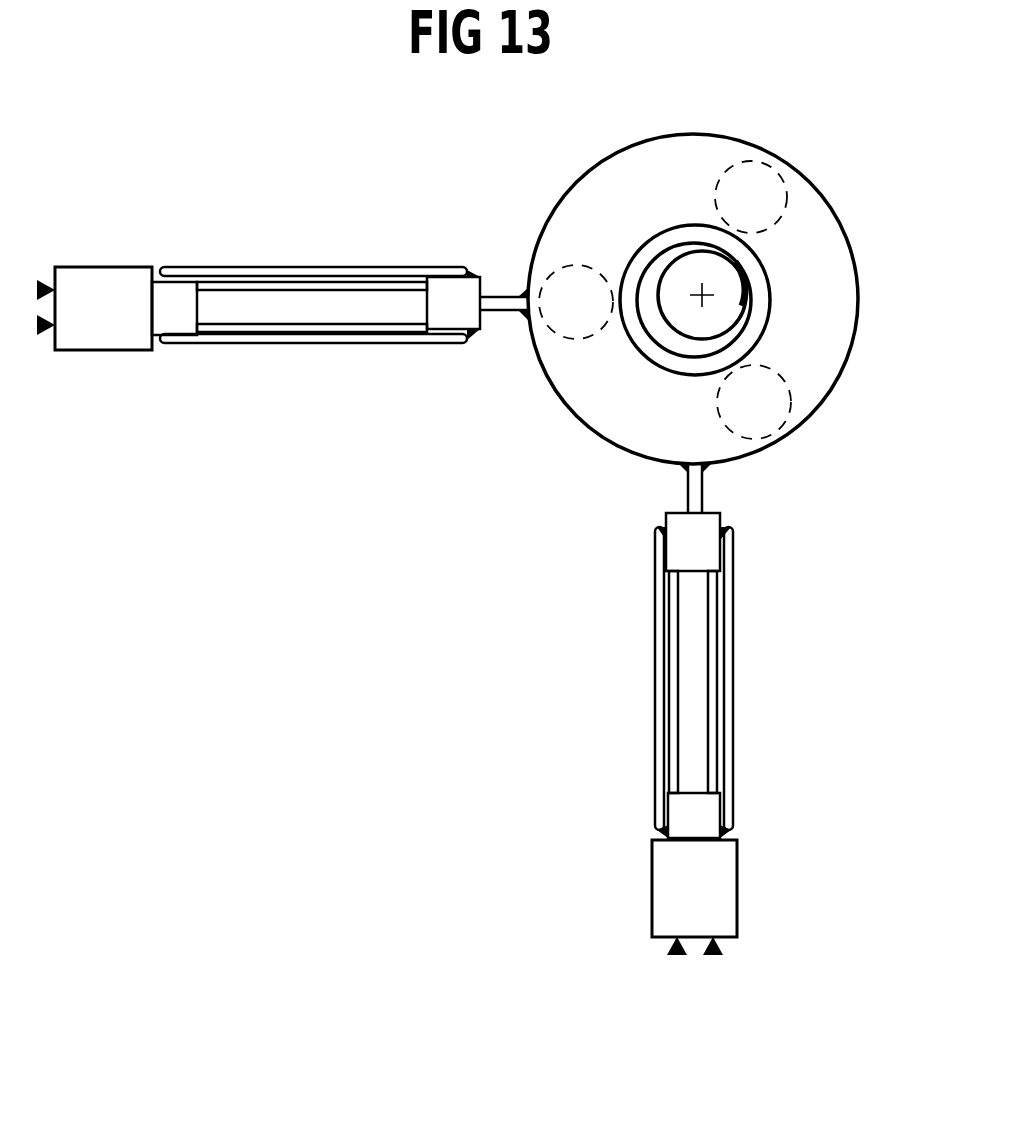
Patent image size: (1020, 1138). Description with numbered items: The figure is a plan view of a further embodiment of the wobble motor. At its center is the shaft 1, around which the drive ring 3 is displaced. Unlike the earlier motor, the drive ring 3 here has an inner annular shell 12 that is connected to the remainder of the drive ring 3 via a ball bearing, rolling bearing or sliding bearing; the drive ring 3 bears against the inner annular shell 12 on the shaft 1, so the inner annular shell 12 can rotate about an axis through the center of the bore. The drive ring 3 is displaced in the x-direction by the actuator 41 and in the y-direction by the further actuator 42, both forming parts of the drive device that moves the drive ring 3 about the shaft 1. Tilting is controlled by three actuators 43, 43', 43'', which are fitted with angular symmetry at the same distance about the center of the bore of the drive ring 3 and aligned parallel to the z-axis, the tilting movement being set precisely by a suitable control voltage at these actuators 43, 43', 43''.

The shaft 1 is at (727, 307).
The drive ring 3 is at (855, 258).
The inner annular shell 12 is at (637, 358).
The actuator 41 is at (301, 226).
The actuator 42 is at (601, 673).
The actuator 43 is at (766, 450).
The actuator 43' is at (547, 260).
The actuator 43'' is at (779, 164).